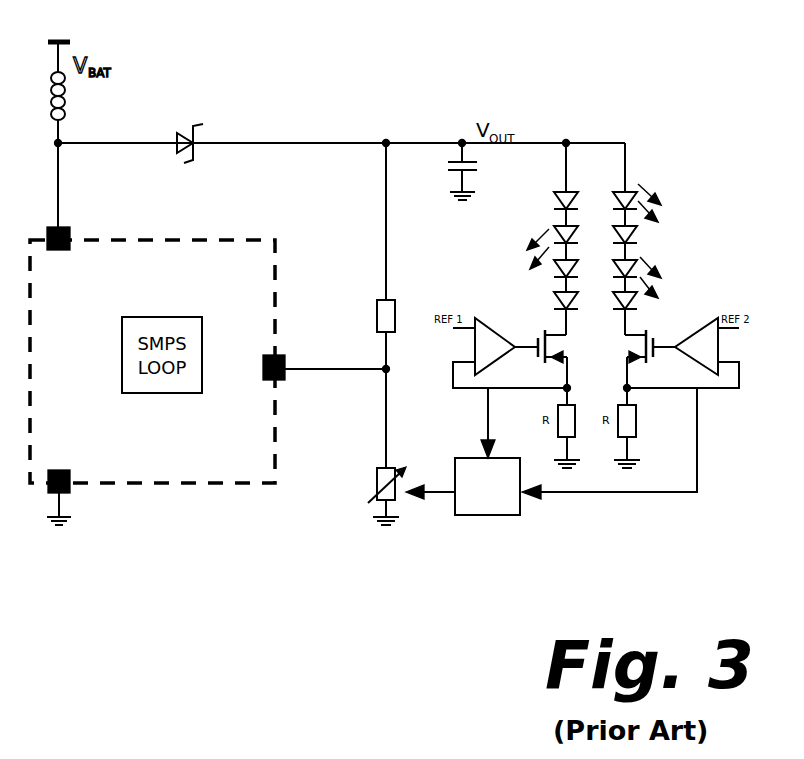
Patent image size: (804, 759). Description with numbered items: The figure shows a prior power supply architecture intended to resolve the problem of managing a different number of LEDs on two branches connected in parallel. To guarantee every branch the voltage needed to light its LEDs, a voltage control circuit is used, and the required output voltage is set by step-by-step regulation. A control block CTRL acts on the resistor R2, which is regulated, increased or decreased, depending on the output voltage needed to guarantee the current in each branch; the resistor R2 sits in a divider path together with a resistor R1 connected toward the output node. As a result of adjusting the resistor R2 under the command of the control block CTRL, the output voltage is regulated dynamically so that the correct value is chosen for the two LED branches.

The feedback resistor R1 is at (375, 237).
The resistor R2 is at (380, 485).
The control block CTRL is at (487, 486).